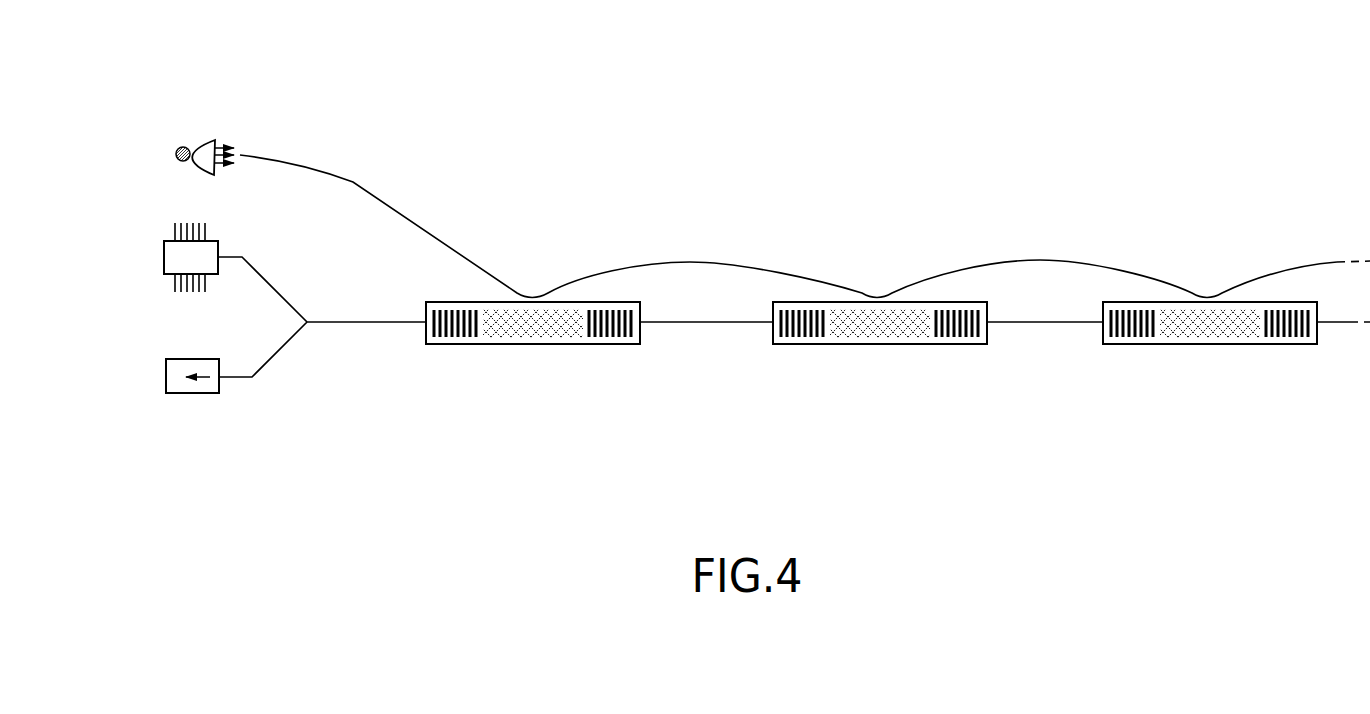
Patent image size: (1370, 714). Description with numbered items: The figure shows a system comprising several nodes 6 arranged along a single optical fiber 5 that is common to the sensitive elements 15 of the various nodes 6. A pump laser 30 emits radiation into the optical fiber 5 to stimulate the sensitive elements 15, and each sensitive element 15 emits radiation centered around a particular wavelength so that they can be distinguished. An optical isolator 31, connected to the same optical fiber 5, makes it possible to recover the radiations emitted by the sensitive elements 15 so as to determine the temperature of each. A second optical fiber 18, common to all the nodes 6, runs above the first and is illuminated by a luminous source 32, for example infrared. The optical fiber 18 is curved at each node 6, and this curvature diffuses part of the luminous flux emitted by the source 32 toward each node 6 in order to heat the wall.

The optical fiber 5 is at (367, 323).
The node 6 is at (871, 272).
The sensitive element 15 is at (542, 356).
The optical fiber 18 is at (355, 182).
The pump laser 30 is at (164, 258).
The optical isolator 31 is at (166, 372).
The luminous source 32 is at (207, 133).